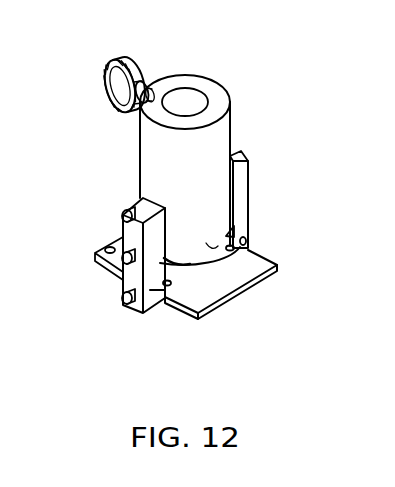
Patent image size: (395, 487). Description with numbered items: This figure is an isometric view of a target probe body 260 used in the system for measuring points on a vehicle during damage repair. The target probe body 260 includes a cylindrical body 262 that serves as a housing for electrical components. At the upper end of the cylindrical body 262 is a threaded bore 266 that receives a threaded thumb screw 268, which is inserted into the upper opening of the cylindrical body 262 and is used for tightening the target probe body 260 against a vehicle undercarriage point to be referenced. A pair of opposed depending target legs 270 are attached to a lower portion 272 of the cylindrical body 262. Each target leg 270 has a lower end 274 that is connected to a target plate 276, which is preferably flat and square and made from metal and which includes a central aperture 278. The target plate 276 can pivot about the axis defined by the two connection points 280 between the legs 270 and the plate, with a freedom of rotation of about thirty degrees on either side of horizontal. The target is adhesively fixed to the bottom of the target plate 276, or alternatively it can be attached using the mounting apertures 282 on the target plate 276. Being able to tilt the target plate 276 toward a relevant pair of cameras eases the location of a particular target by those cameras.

The target probe body 260 is at (248, 183).
The cylindrical body 262 is at (232, 105).
The threaded bore 266 is at (153, 82).
The threaded thumb screw 268 is at (107, 80).
The target legs 270 is at (240, 152).
The lower portion 272 is at (212, 243).
The lower end 274 is at (133, 312).
The target plate 276 is at (235, 297).
The central aperture 278 is at (190, 268).
The connection points 280 is at (245, 240).
The mounting apertures 282 is at (106, 248).